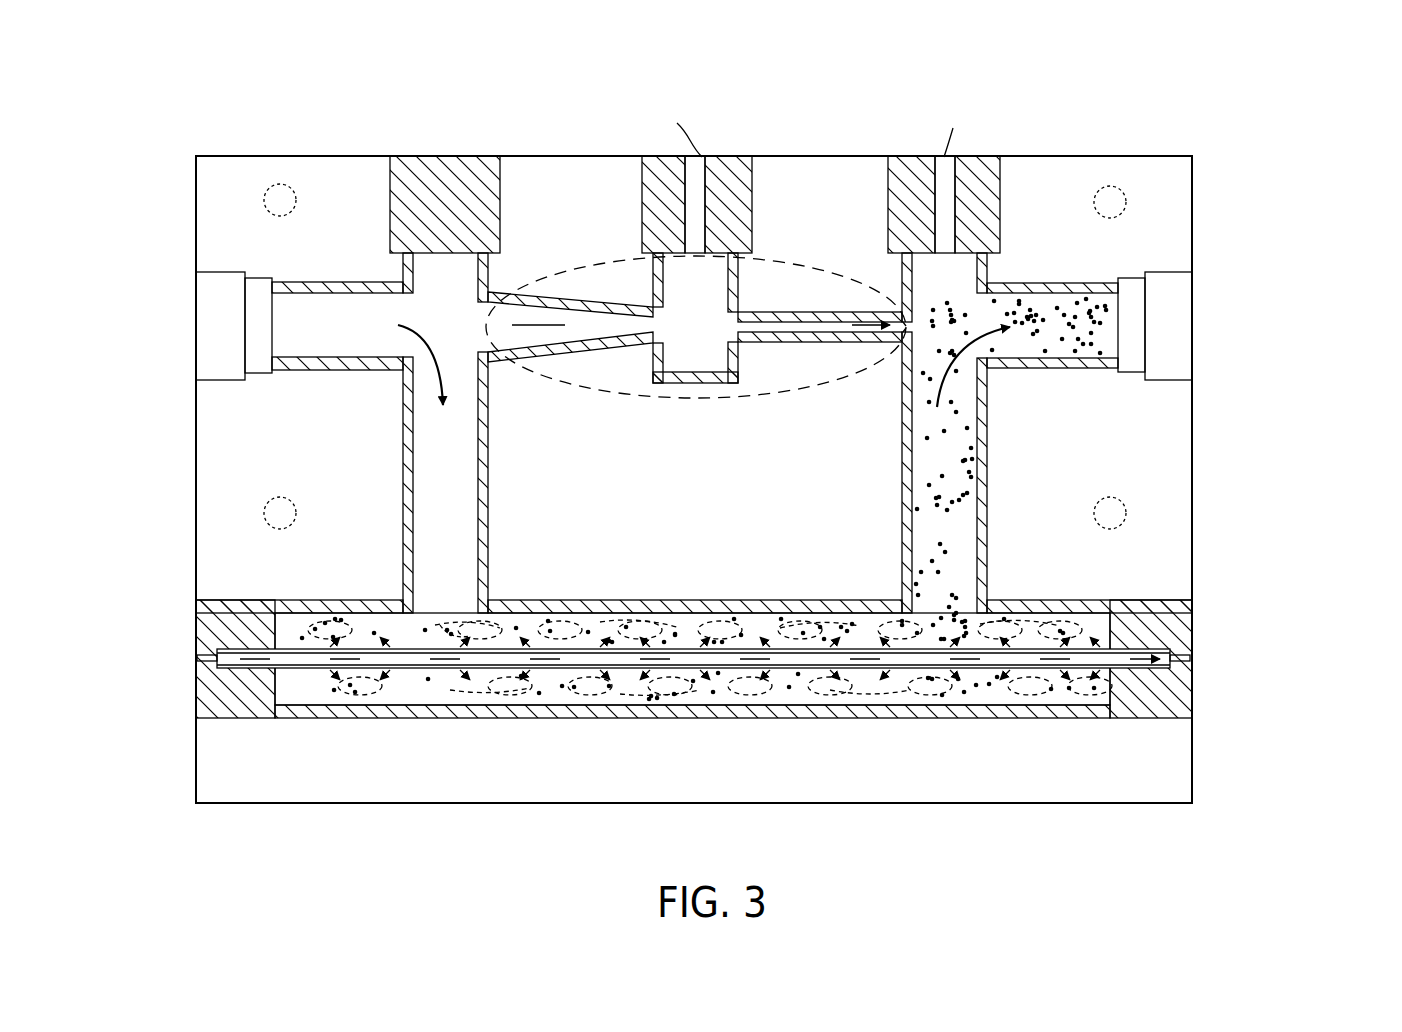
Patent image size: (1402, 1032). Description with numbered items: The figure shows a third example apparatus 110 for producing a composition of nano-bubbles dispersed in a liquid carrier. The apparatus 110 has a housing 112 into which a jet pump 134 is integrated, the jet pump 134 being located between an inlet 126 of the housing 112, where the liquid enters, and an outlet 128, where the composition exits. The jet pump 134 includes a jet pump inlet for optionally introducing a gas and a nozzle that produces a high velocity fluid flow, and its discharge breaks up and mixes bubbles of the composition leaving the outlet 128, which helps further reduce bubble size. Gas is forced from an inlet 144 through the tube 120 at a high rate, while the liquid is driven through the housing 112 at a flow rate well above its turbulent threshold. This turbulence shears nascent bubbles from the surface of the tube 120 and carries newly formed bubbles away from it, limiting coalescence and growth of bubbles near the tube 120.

The apparatus 110 is at (463, 113).
The housing 112 is at (190, 177).
The tube 120 is at (952, 655).
The inlet 126 is at (210, 317).
The outlet 128 is at (1177, 318).
The jet pump 134 is at (777, 257).
The inlet 144 is at (197, 658).